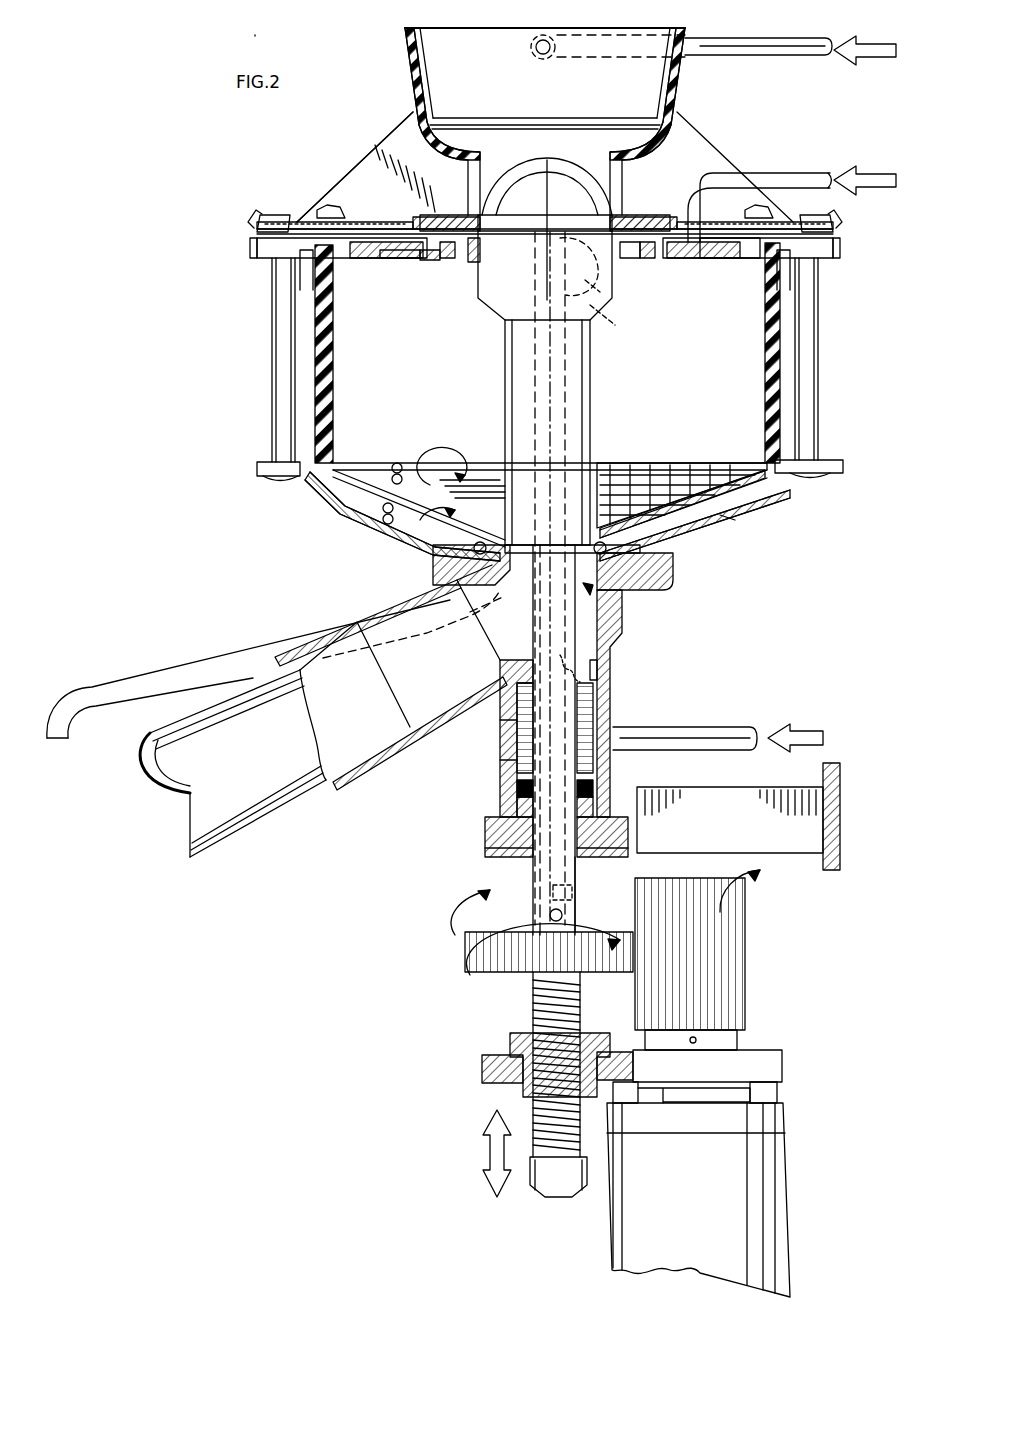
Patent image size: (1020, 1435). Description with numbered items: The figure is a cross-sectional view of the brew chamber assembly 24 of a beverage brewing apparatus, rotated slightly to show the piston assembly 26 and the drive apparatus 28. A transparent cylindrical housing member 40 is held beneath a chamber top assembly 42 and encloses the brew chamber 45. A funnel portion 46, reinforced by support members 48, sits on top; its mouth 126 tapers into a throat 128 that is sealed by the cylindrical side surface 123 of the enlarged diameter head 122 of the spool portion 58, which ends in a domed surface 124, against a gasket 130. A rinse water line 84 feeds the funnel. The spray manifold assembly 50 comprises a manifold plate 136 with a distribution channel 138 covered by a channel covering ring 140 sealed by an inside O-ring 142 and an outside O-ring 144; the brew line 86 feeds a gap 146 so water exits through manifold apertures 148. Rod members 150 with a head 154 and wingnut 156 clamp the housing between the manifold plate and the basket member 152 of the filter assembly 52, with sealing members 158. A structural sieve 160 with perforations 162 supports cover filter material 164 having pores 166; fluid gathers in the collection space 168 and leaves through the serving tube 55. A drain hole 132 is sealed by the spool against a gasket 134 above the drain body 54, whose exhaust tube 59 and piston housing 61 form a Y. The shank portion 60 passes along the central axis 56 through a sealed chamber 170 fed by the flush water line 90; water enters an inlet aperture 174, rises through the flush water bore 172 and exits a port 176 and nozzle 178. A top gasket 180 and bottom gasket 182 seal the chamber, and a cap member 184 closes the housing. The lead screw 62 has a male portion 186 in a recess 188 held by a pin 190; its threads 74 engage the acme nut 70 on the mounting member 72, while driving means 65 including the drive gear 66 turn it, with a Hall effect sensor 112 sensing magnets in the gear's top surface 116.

The brew chamber assembly 24 is at (210, 135).
The piston assembly 26 is at (622, 620).
The drive apparatus 28 is at (425, 1050).
The housing member 40 is at (334, 378).
The chamber top assembly 42 is at (275, 165).
The brew chamber 45 is at (458, 386).
The funnel portion 46 is at (410, 82).
The support members 48 is at (352, 172).
The spray manifold assembly 50 is at (250, 252).
The filter assembly 52 is at (377, 535).
The drain body 54 is at (650, 582).
The serving tube 55 is at (185, 670).
The central axis 56 is at (548, 350).
The spool portion 58 is at (512, 425).
The exhaust tube 59 is at (385, 625).
The shank portion 60 is at (530, 865).
The piston housing 61 is at (612, 688).
The lead screw 62 is at (530, 1012).
The driving means 65 is at (608, 925).
The drive gear 66 is at (745, 968).
The acme nut 70 is at (512, 1043).
The mounting member 72 is at (482, 1070).
The threads 74 is at (533, 985).
The rinse water line 84 is at (800, 38).
The brew line 86 is at (792, 173).
The flush water line 90 is at (733, 727).
The Hall effect sensor 112 is at (770, 790).
The top surface 116 is at (695, 878).
The enlarged diameter head 122 is at (520, 257).
The cylindrical side surface 123 is at (612, 287).
The domed surface 124 is at (540, 170).
The mouth 126 is at (425, 28).
The throat 128 is at (474, 265).
The gasket 130 is at (447, 216).
The drain hole 132 is at (480, 478).
The gasket 134 is at (622, 597).
The manifold plate 136 is at (258, 230).
The distribution channel 138 is at (355, 260).
The channel covering ring 140 is at (375, 238).
The inside O-ring 142 is at (622, 263).
The outside O-ring 144 is at (722, 260).
The gap 146 is at (395, 260).
The manifold apertures 148 is at (400, 260).
The rod members 150 is at (270, 372).
The basket member 152 is at (730, 520).
The head 154 is at (270, 480).
The wingnut 156 is at (290, 195).
The sealing members 158 is at (385, 260).
The structural sieve 160 is at (760, 500).
The perforations 162 is at (608, 552).
The cover filter material 164 is at (710, 478).
The pores 166 is at (668, 500).
The collection space 168 is at (700, 530).
The sealed chamber 170 is at (500, 738).
The flush water bore 172 is at (582, 412).
The inlet aperture 174 is at (612, 712).
The port 176 is at (575, 262).
The nozzle 178 is at (620, 318).
The top gasket 180 is at (500, 700).
The bottom gasket 182 is at (515, 790).
The cap member 184 is at (485, 840).
The male portion 186 is at (580, 880).
The recess 188 is at (553, 893).
The pin 190 is at (548, 914).